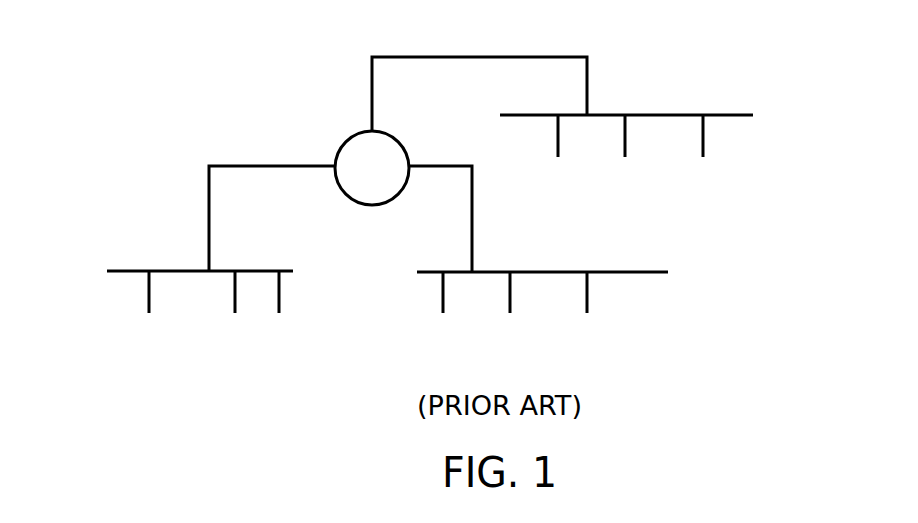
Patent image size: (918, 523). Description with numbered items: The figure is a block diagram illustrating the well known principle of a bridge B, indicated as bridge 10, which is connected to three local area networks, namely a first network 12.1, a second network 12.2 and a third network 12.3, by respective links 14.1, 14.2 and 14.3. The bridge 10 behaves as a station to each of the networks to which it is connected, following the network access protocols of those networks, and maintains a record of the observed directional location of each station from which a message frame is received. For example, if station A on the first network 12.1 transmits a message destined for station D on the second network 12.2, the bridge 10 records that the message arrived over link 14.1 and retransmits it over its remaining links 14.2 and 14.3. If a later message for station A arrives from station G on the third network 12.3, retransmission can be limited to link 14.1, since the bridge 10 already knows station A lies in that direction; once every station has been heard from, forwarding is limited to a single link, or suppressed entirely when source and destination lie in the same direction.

The bridge 10 is at (385, 134).
The LAN-1 12.1 is at (178, 271).
The LAN-2 12.2 is at (645, 115).
The LAN-3 12.3 is at (617, 272).
The link 14.1 is at (270, 166).
The link 14.2 is at (438, 57).
The link 14.3 is at (453, 166).